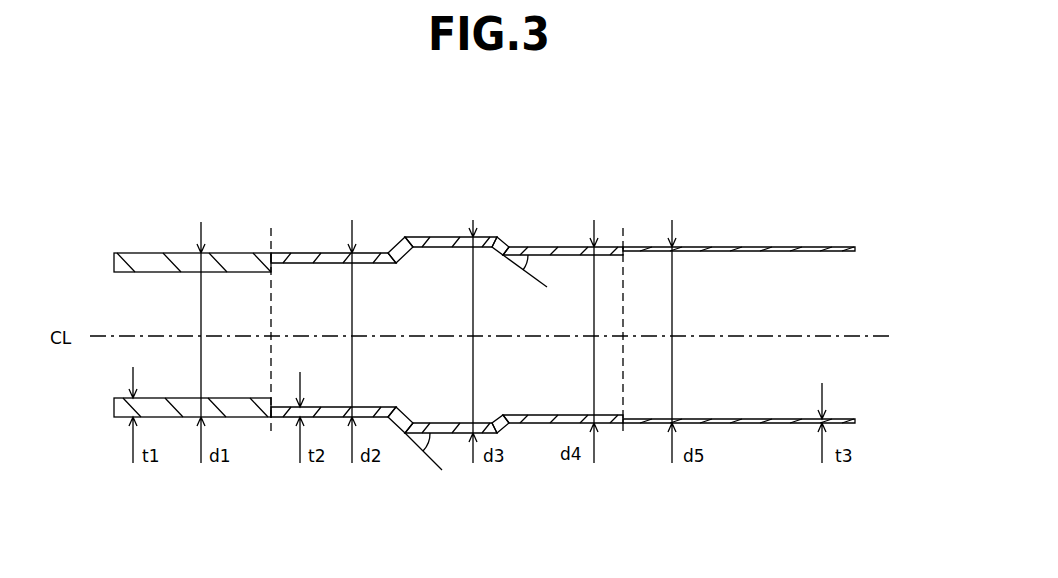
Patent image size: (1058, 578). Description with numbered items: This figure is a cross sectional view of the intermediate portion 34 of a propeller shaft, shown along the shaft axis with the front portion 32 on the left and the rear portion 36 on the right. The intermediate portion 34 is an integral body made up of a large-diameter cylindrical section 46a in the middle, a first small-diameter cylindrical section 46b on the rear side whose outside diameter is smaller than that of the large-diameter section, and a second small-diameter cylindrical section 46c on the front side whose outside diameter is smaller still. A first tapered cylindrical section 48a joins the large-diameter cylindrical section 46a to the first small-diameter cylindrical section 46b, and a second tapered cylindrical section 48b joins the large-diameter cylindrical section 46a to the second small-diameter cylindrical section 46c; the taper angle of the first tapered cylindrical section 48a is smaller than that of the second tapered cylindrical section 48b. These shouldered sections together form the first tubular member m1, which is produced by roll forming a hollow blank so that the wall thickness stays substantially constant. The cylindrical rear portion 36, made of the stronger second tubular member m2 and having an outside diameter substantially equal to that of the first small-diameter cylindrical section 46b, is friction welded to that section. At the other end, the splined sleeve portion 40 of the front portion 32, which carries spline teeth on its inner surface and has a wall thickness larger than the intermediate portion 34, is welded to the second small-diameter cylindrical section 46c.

The front portion 32 is at (196, 177).
The intermediate portion 34 is at (510, 177).
The rear portion 36 is at (720, 177).
The splined sleeve portion 40 is at (153, 261).
The large-diameter cylindrical section 46a is at (423, 238).
The first small-diameter cylindrical section 46b is at (567, 250).
The second small-diameter cylindrical section 46c is at (302, 257).
The first tapered cylindrical section 48a is at (507, 247).
The second tapered cylindrical section 48b is at (392, 255).
The first tubular member m1 is at (525, 424).
The second tubular member m2 is at (745, 246).